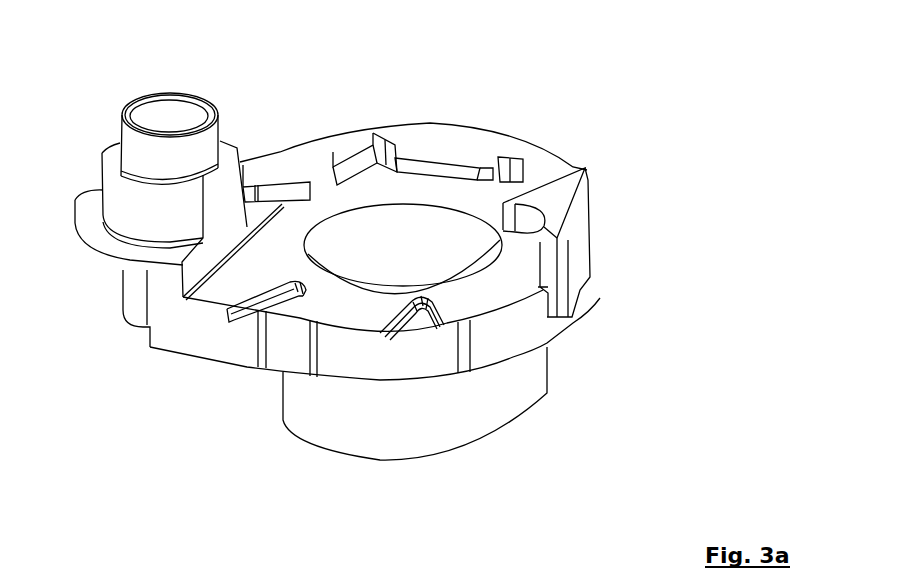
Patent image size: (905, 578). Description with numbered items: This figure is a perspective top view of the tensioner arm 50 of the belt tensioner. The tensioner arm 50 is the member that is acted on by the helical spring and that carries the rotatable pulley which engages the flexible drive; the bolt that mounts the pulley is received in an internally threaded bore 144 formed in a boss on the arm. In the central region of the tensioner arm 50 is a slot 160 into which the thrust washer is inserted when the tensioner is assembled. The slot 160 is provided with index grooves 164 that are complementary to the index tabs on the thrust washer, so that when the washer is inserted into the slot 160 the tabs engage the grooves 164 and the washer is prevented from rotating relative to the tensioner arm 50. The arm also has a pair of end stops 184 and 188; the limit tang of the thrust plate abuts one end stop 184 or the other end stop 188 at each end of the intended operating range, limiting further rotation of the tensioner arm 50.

The tensioner arm 50 is at (615, 145).
The internally threaded bore 144 is at (170, 115).
The slot 160 is at (280, 203).
The index grooves 164 is at (513, 158).
The end stop 184 is at (263, 347).
The end stop 188 is at (557, 297).